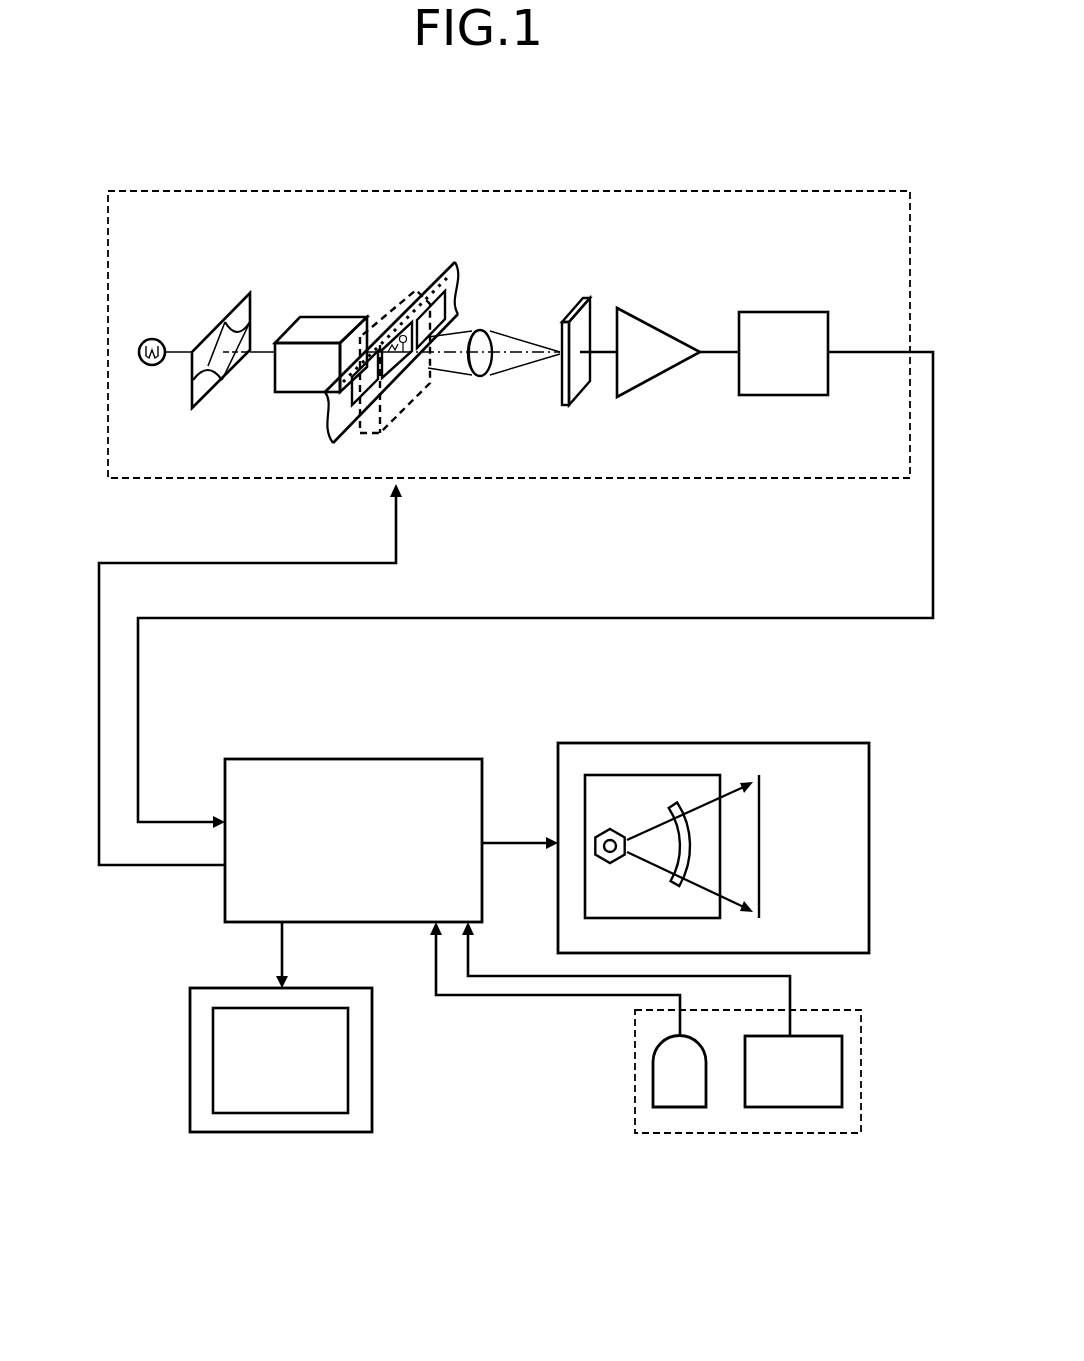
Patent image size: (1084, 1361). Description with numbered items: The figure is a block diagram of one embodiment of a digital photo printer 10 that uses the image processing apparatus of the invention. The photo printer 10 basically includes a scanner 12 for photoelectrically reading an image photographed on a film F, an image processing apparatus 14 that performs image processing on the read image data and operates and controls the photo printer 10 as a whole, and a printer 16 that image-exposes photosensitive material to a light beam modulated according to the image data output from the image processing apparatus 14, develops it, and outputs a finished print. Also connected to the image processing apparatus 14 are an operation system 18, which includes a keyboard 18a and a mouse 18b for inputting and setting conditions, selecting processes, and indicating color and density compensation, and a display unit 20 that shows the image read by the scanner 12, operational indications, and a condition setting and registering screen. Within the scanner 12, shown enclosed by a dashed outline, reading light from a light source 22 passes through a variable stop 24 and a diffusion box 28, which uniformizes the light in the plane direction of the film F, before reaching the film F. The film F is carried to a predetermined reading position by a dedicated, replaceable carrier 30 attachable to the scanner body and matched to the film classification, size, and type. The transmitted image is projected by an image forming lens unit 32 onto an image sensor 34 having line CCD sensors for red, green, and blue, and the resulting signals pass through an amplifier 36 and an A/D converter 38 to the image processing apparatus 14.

The digital photo printer 10 is at (784, 160).
The scanner 12 is at (328, 190).
The image processing apparatus 14 is at (352, 772).
The printer 16 is at (710, 742).
The operation system 18 is at (746, 1122).
The keyboard 18a is at (795, 1108).
The mouse 18b is at (675, 1108).
The display unit 20 is at (272, 1135).
The light source 22 is at (153, 338).
The variable stop 24 is at (228, 318).
The diffusion box 28 is at (320, 334).
The carrier 30 is at (410, 393).
The image forming lens unit 32 is at (483, 330).
The image sensor 34 is at (583, 322).
The amplifier 36 is at (660, 378).
The A/D converter 38 is at (790, 318).
The film F is at (447, 262).